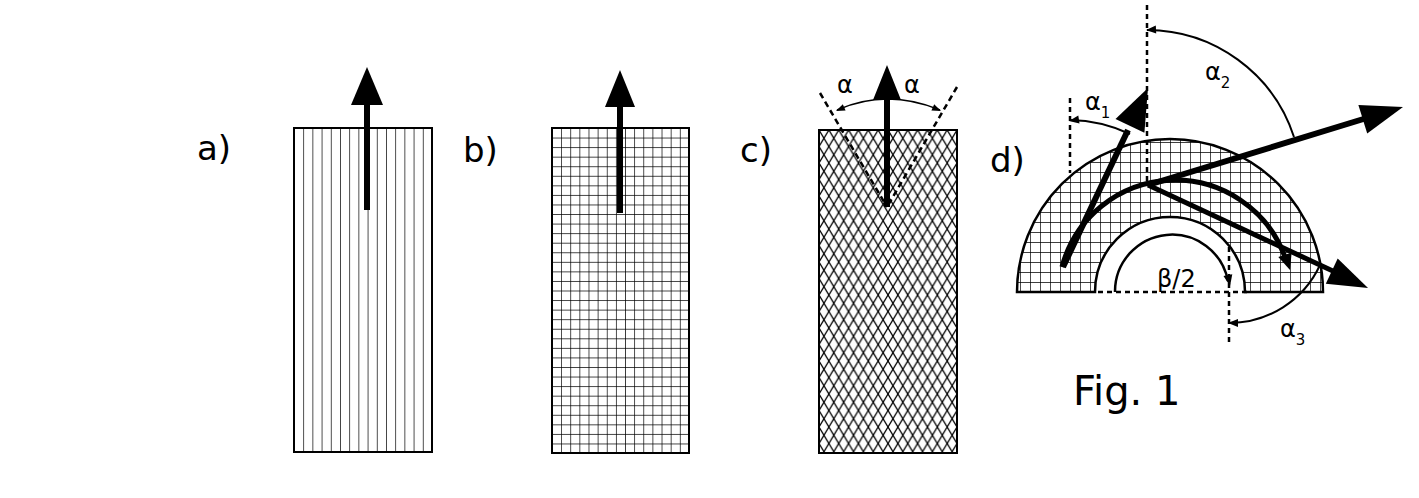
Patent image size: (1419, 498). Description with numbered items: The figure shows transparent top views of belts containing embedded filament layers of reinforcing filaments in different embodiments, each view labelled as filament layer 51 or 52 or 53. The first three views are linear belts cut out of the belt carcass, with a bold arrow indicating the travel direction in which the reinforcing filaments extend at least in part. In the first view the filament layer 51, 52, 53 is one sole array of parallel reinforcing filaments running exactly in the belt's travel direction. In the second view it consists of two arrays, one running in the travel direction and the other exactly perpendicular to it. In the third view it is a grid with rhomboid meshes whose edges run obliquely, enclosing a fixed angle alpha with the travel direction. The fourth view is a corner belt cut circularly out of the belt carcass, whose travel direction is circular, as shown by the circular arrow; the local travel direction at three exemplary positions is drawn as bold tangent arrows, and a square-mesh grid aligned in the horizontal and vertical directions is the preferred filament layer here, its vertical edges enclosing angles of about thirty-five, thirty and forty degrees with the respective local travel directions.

The filament layer 51 is at (744, 290).
The filament layer 52 is at (744, 290).
The filament layer 53 is at (1043, 272).